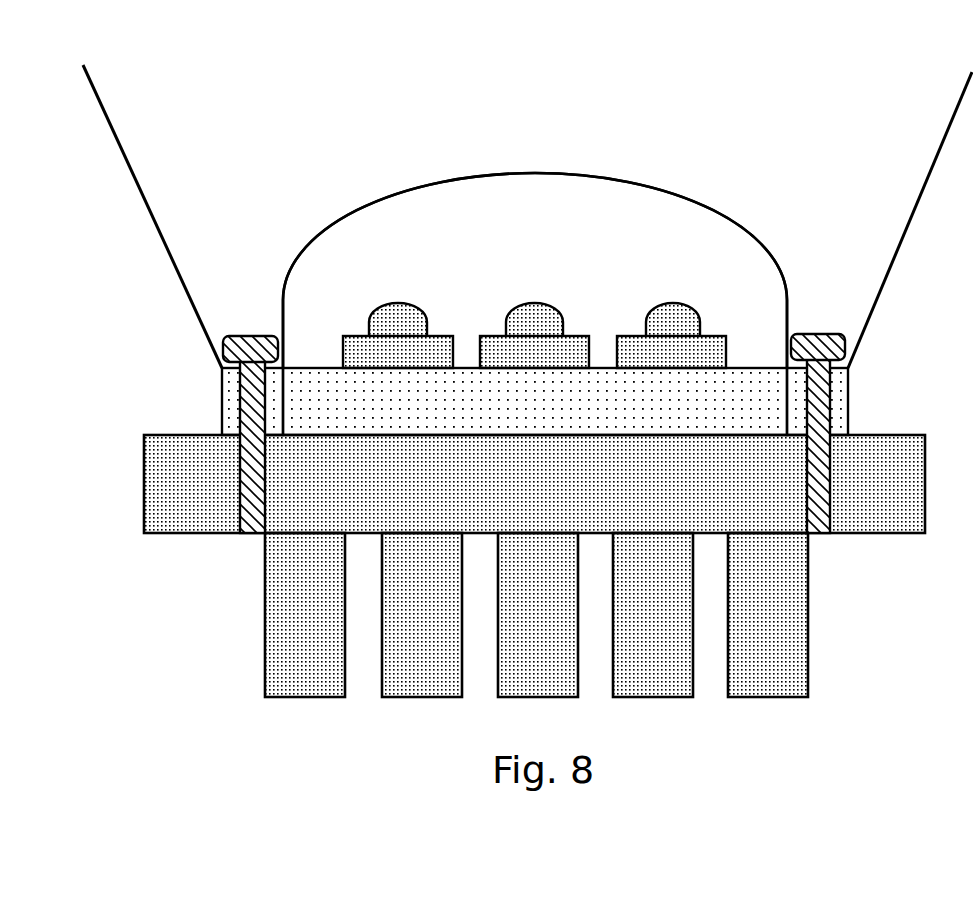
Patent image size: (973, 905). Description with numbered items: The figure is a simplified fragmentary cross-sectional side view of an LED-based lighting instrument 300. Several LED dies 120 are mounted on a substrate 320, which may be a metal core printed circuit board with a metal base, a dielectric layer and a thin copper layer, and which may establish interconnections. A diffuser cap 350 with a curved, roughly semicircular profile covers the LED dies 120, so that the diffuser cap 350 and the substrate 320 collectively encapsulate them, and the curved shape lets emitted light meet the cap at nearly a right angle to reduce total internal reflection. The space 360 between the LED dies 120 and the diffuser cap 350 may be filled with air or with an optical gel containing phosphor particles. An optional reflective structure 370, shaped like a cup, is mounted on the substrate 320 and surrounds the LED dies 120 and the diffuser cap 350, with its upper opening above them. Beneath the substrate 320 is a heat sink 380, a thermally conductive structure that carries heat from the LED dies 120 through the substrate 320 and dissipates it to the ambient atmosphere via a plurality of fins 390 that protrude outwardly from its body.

The LED-based lighting instrument 300 is at (428, 92).
The LED dies 120 is at (398, 302).
The substrate 320 is at (557, 415).
The diffuser cap 350 is at (533, 173).
The space 360 is at (637, 202).
The reflective structure 370 is at (118, 138).
The heat sink 380 is at (479, 566).
The fins 390 is at (327, 627).